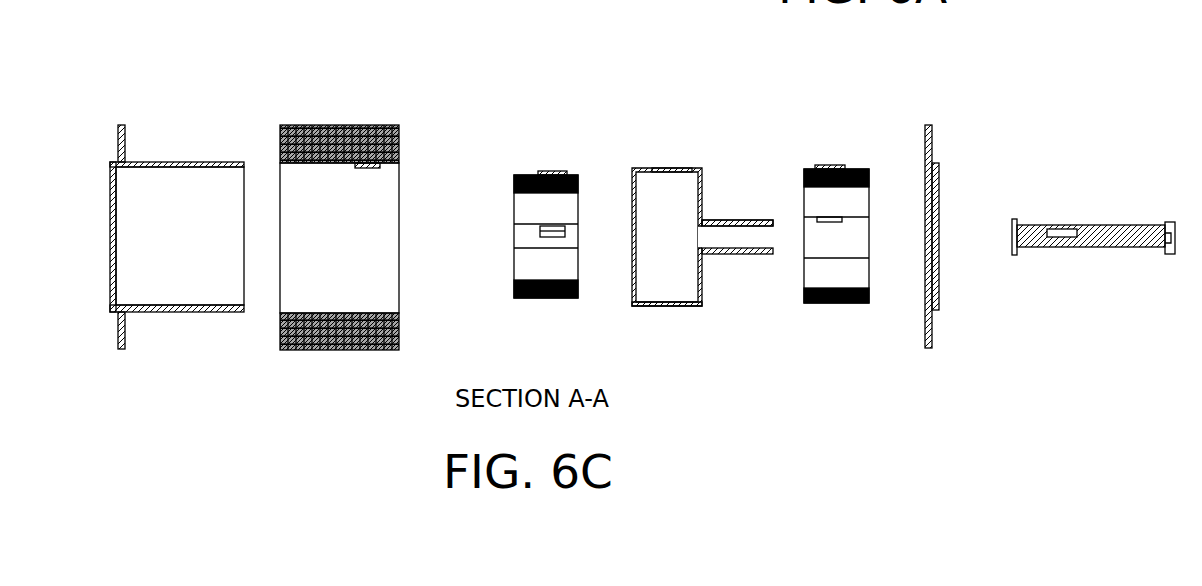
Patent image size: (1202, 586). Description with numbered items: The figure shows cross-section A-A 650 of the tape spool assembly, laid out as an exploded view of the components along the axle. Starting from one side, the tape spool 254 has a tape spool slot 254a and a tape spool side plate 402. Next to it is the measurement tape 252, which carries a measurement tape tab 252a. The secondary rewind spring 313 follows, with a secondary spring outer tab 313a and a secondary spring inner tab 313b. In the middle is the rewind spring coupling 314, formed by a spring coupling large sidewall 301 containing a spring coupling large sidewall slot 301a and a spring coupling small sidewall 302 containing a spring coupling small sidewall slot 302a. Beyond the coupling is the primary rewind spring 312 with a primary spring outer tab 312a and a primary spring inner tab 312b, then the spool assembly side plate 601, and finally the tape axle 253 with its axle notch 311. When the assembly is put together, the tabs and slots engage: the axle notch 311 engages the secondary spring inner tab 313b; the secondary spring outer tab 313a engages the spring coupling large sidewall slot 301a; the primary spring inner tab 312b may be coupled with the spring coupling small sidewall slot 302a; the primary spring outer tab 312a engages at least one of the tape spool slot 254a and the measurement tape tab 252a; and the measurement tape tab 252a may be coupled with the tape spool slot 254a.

The tape spool side plate 402 is at (120, 125).
The tape spool 254 is at (199, 181).
The tape spool slot 254a is at (158, 163).
The measurement tape 252 is at (381, 203).
The measurement tape tab 252a is at (368, 168).
The secondary rewind spring 313 is at (514, 189).
The secondary spring outer tab 313a is at (548, 172).
The secondary spring inner tab 313b is at (550, 240).
The spring coupling large sidewall 301 is at (671, 193).
The spring coupling large sidewall slot 301a is at (670, 168).
The cross-section A-A 650 is at (656, 198).
The spring coupling small sidewall 302 is at (755, 231).
The spring coupling small sidewall slot 302a is at (736, 220).
The rewind spring coupling 314 is at (702, 273).
The primary rewind spring 312 is at (858, 199).
The primary spring outer tab 312a is at (823, 165).
The primary spring inner tab 312b is at (825, 222).
The spool assembly side plate 601 is at (928, 125).
The axle notch 311 is at (1057, 228).
The tape axle 253 is at (1107, 174).